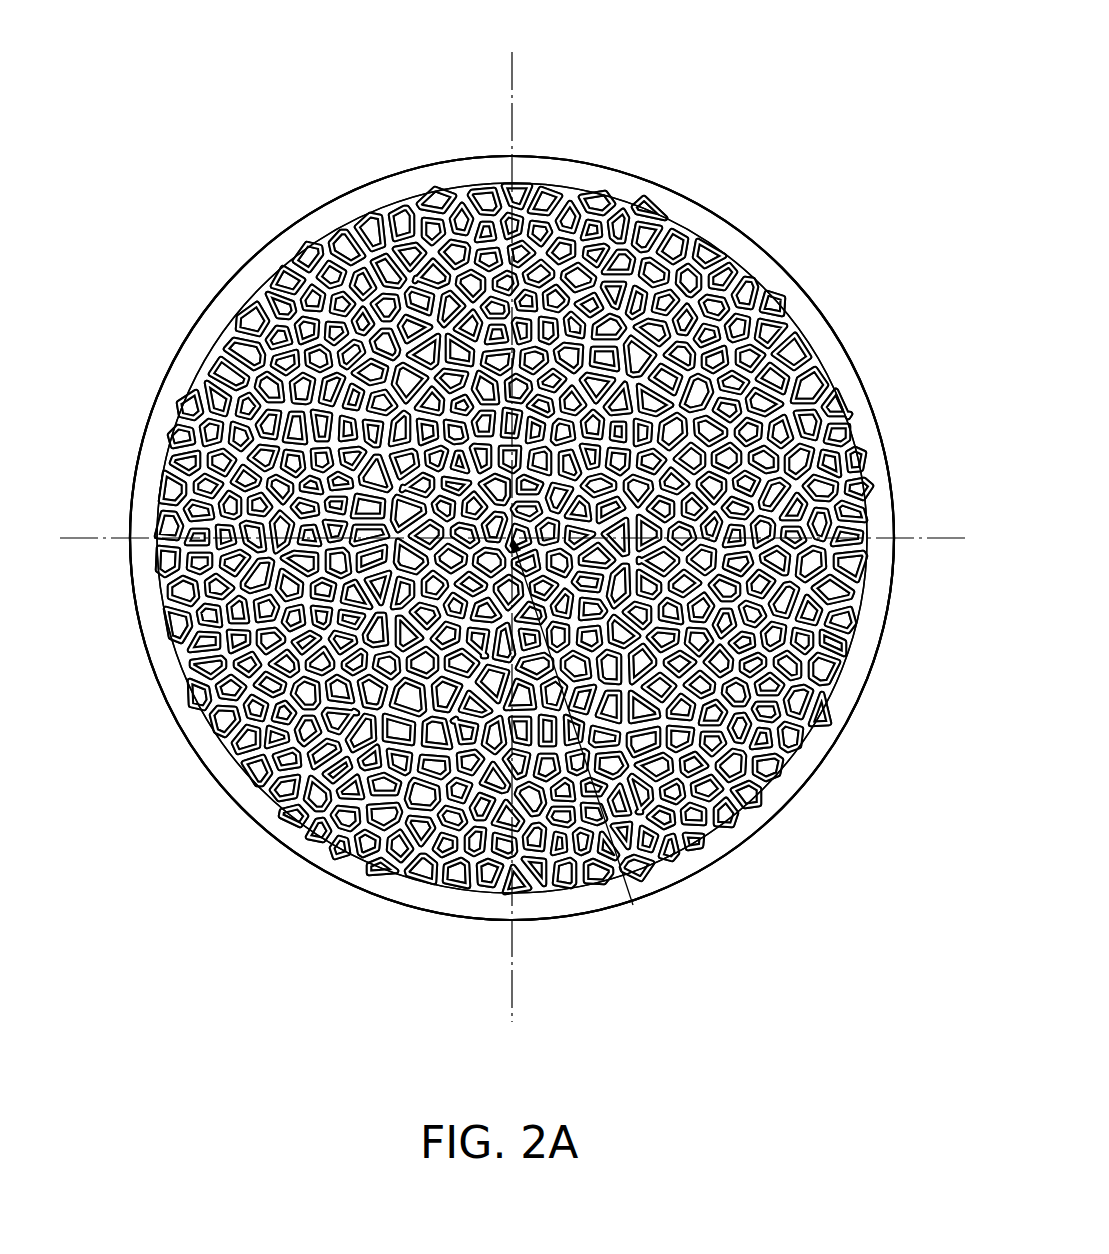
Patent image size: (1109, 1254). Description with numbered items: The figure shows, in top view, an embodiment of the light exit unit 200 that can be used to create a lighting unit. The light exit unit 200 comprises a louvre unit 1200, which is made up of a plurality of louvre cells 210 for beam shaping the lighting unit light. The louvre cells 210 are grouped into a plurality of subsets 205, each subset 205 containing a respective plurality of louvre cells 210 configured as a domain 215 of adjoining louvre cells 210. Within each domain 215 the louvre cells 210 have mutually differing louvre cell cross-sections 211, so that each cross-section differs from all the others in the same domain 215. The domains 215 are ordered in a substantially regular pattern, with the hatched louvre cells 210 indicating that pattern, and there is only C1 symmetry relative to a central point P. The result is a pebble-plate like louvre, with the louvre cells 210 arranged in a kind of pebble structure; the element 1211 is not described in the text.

The louvre unit 1200 is at (698, 107).
The louvre cells 210 is at (727, 282).
The louvre cell cross-sections 211 is at (813, 460).
The subsets 205 is at (158, 583).
The domain 215 is at (456, 538).
The inner boundary 1211 is at (207, 718).
The light exit unit 200 is at (207, 825).
The central point P is at (583, 740).